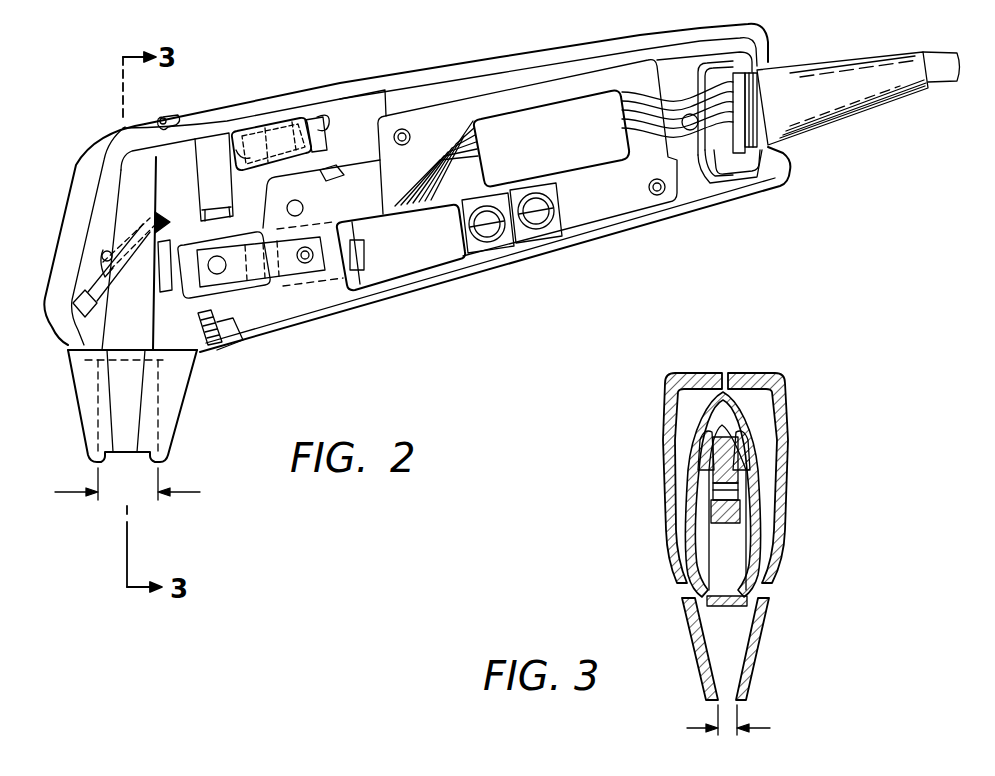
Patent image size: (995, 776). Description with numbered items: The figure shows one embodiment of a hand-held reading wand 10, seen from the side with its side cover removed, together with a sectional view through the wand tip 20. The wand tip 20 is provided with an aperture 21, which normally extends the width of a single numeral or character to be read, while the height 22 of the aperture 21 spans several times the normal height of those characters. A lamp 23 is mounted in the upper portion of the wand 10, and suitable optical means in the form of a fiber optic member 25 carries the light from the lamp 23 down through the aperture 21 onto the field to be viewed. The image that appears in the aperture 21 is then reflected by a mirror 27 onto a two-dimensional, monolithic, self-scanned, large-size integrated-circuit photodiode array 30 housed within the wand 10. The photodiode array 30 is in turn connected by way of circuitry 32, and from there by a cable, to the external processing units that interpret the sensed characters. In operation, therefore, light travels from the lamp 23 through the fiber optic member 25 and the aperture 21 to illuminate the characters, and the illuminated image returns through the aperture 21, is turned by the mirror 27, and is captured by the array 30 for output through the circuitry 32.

In FIG. 2, the wand 10 is at (253, 69).
In FIG. 3, the wand 10 is at (789, 401).
In FIG. 2, the wand tip 20 is at (80, 434).
In FIG. 3, the wand tip 20 is at (725, 649).
In FIG. 3, the aperture 21 is at (725, 698).
In FIG. 2, the height of the aperture 22 is at (127, 486).
In FIG. 2, the lamp 23 is at (262, 150).
In FIG. 2, the fiber optic member 25 is at (146, 204).
In FIG. 3, the fiber optic member 25 is at (762, 535).
In FIG. 2, the mirror 27 is at (100, 306).
In FIG. 2, the photodiode array 30 is at (357, 257).
In FIG. 2, the circuitry 32 is at (554, 143).